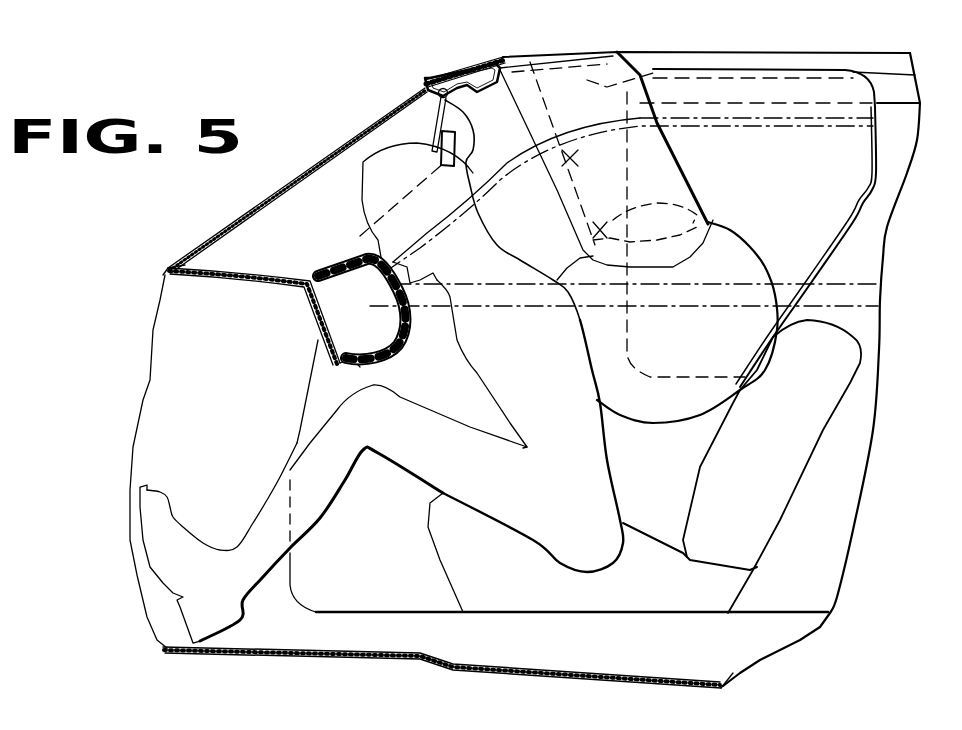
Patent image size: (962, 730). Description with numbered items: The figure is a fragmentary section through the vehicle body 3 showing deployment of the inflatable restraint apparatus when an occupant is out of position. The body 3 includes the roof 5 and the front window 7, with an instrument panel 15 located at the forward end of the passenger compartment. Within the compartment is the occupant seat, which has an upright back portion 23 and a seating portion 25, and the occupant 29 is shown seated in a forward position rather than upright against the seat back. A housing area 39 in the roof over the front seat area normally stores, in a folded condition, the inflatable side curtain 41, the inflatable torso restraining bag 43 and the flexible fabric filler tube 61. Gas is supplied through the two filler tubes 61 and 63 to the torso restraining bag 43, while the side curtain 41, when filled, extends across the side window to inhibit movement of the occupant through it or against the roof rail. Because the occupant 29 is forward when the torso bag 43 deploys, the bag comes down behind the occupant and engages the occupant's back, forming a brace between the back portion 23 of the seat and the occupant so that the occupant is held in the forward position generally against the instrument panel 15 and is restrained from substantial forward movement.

The body 3 is at (648, 53).
The roof 5 is at (476, 63).
The front window 7 is at (333, 150).
The instrument panel 15 is at (393, 348).
The back portion 23 is at (770, 507).
The seating portion 25 is at (623, 587).
The occupant 29 is at (597, 457).
The housing area 39 is at (811, 53).
The side curtain 41 is at (843, 201).
The torso restraining bag 43 is at (743, 262).
The filler tube 61 is at (566, 192).
The filler tube 63 is at (657, 160).